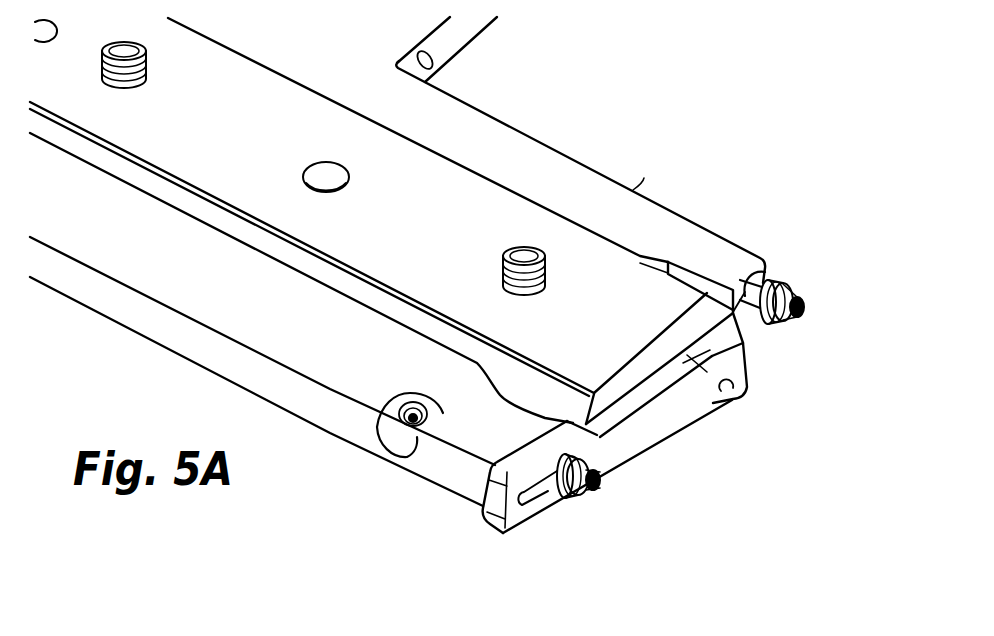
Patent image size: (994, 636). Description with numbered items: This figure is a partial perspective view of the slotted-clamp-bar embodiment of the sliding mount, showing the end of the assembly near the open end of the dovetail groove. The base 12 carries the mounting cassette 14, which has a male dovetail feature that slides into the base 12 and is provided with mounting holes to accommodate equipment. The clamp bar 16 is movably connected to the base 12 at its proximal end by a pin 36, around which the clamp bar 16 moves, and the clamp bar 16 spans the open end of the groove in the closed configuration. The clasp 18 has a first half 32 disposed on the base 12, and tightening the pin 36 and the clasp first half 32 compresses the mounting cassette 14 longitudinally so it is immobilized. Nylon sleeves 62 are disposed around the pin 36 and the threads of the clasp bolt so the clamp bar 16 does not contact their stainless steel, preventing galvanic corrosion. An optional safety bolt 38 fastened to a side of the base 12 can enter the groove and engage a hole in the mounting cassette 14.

The base 12 is at (633, 190).
The mounting cassette 14 is at (430, 153).
The clamp bar 16 is at (673, 447).
The clasp 18 is at (830, 328).
The clasp first half 32 is at (749, 292).
The pin 36 is at (600, 487).
The safety bolt 38 is at (403, 433).
The nylon sleeves 62 is at (767, 273).